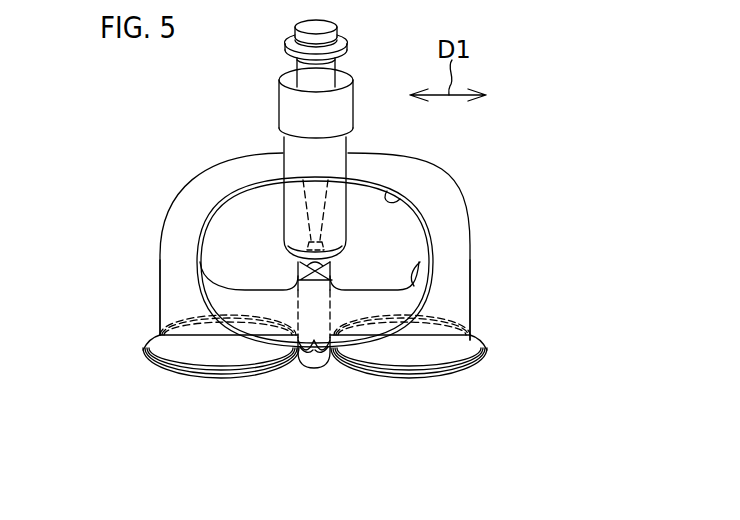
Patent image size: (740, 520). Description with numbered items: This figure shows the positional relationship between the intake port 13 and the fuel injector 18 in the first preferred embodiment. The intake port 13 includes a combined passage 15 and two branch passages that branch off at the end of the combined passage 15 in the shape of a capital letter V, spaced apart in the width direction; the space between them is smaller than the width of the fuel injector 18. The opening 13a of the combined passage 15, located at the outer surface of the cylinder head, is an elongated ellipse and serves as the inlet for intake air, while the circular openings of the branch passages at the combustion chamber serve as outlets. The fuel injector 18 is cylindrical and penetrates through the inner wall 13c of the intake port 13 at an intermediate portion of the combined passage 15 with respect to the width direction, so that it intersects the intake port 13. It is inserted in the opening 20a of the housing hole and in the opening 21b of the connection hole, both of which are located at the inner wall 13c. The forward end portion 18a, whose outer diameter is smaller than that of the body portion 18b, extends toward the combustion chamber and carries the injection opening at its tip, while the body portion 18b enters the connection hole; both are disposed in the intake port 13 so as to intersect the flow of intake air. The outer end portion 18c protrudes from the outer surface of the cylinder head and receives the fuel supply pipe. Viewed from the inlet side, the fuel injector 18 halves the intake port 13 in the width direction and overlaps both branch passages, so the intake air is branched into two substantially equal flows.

The intake port 13 is at (194, 179).
The opening of the combined passage 13a is at (400, 199).
The inner wall of the intake port 13c is at (420, 264).
The combined passage 15 is at (195, 244).
The fuel injector 18 is at (280, 80).
The forward end portion 18a is at (313, 370).
The body portion 18b is at (293, 215).
The outer end portion 18c is at (300, 114).
The opening of the housing hole 20a is at (330, 265).
The opening of the connection hole 21b is at (347, 138).